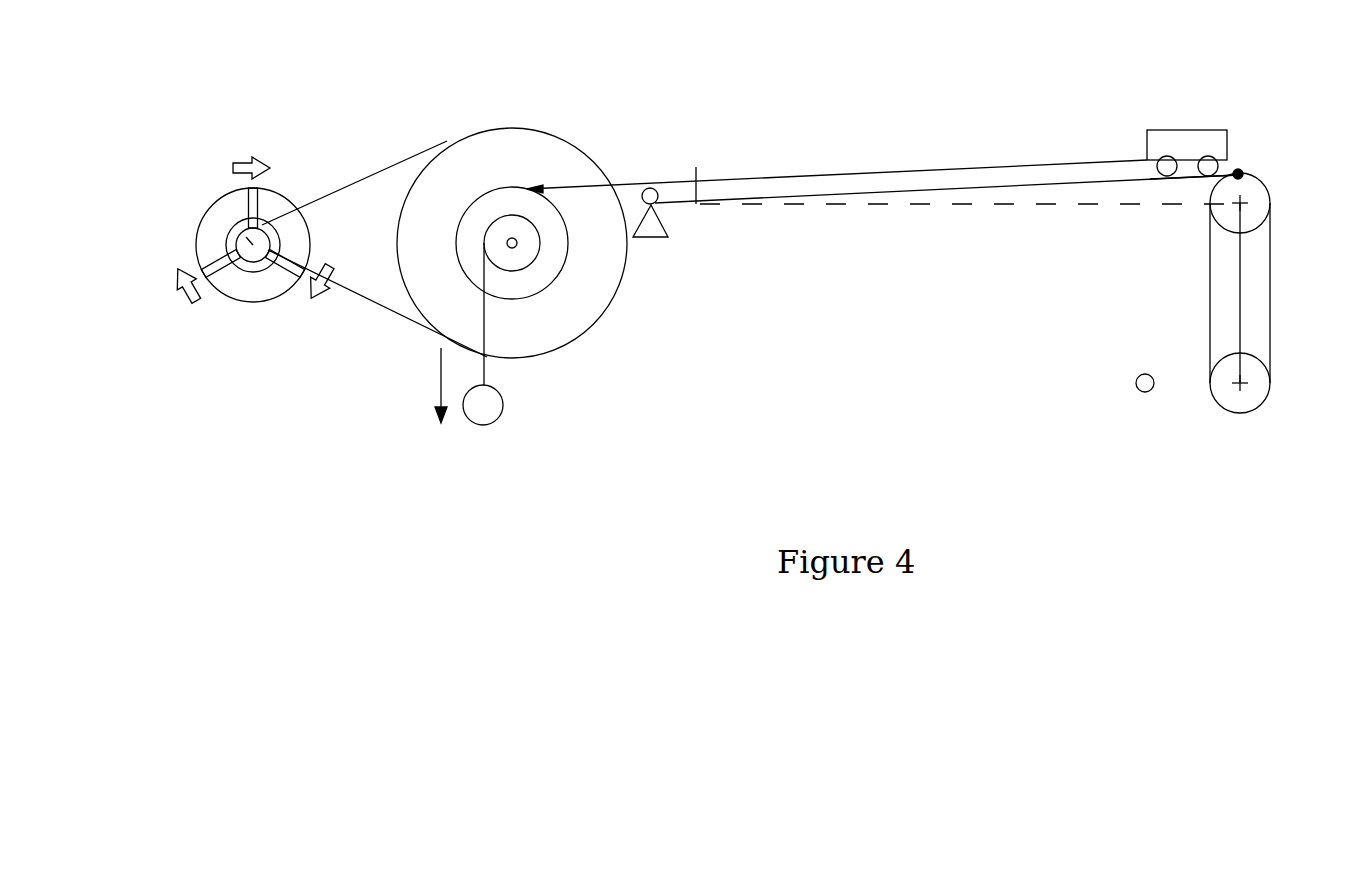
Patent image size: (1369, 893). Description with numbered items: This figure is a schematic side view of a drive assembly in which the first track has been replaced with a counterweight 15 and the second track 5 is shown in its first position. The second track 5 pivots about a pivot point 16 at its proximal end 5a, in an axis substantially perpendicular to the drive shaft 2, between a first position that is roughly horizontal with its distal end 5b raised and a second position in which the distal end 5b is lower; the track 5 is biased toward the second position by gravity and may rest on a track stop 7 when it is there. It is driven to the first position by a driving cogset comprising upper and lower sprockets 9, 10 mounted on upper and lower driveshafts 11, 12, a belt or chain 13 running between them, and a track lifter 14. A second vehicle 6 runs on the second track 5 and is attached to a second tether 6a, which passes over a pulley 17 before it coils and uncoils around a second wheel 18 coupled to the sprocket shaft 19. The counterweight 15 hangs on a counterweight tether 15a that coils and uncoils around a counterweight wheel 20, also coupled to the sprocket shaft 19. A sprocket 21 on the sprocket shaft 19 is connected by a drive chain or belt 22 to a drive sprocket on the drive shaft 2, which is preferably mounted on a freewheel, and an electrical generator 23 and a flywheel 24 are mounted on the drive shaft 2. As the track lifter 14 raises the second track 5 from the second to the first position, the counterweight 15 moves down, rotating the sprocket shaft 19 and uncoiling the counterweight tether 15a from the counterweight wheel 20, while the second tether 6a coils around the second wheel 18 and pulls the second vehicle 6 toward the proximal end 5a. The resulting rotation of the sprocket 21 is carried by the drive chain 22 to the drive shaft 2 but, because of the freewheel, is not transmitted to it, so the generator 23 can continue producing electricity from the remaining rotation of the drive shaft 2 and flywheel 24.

The drive shaft 2 is at (248, 243).
The electrical generator 23 is at (233, 228).
The flywheel 24 is at (283, 196).
The drive chain or belt 22 is at (368, 173).
The sprocket 21 is at (527, 128).
The second wheel 18 is at (568, 266).
The counterweight wheel 20 is at (530, 265).
The sprocket shaft 19 is at (512, 250).
The counterweight 15 is at (483, 427).
The counterweight tether 15a is at (481, 368).
The second tether 6a is at (920, 172).
The pulley 17 is at (650, 188).
The pivot point 16 is at (651, 240).
The proximal end of the second track 5a is at (662, 206).
The second track 5 is at (900, 193).
The distal end of the second track 5b is at (1230, 178).
The second vehicle 6 is at (1187, 130).
The track lifter 14 is at (1240, 170).
The lower sprocket 10 is at (1259, 179).
The lower driveshaft 12 is at (1245, 208).
The belt or chain 13 is at (1272, 295).
The upper sprocket 9 is at (1240, 414).
The upper driveshaft 11 is at (1243, 387).
The track stop 7 is at (1138, 390).